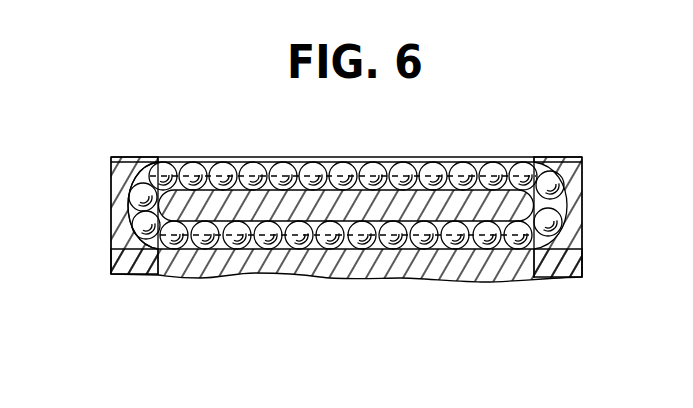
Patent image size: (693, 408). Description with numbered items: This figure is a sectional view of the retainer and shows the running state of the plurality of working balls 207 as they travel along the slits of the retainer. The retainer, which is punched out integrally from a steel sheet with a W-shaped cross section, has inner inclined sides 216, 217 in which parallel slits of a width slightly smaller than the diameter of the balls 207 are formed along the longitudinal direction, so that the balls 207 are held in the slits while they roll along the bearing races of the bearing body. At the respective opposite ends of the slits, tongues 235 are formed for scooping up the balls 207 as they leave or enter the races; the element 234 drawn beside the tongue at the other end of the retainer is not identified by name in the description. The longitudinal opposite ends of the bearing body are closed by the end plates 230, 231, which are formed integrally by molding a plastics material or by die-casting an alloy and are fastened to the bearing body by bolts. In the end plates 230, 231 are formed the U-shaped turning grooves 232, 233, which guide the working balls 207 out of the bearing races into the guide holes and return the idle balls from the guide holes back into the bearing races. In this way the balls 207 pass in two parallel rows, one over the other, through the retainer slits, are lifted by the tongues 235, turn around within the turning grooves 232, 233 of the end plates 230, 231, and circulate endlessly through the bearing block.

The working balls 207 is at (492, 160).
The inner inclined side 216 is at (677, 247).
The inner inclined side 217 is at (679, 274).
The end plate 230 is at (583, 180).
The end plate 231 is at (108, 245).
The U-shaped turning groove 232 is at (557, 210).
The U-shaped turning groove 233 is at (130, 215).
The right end wall 234 is at (532, 162).
The tongue 235 is at (155, 160).